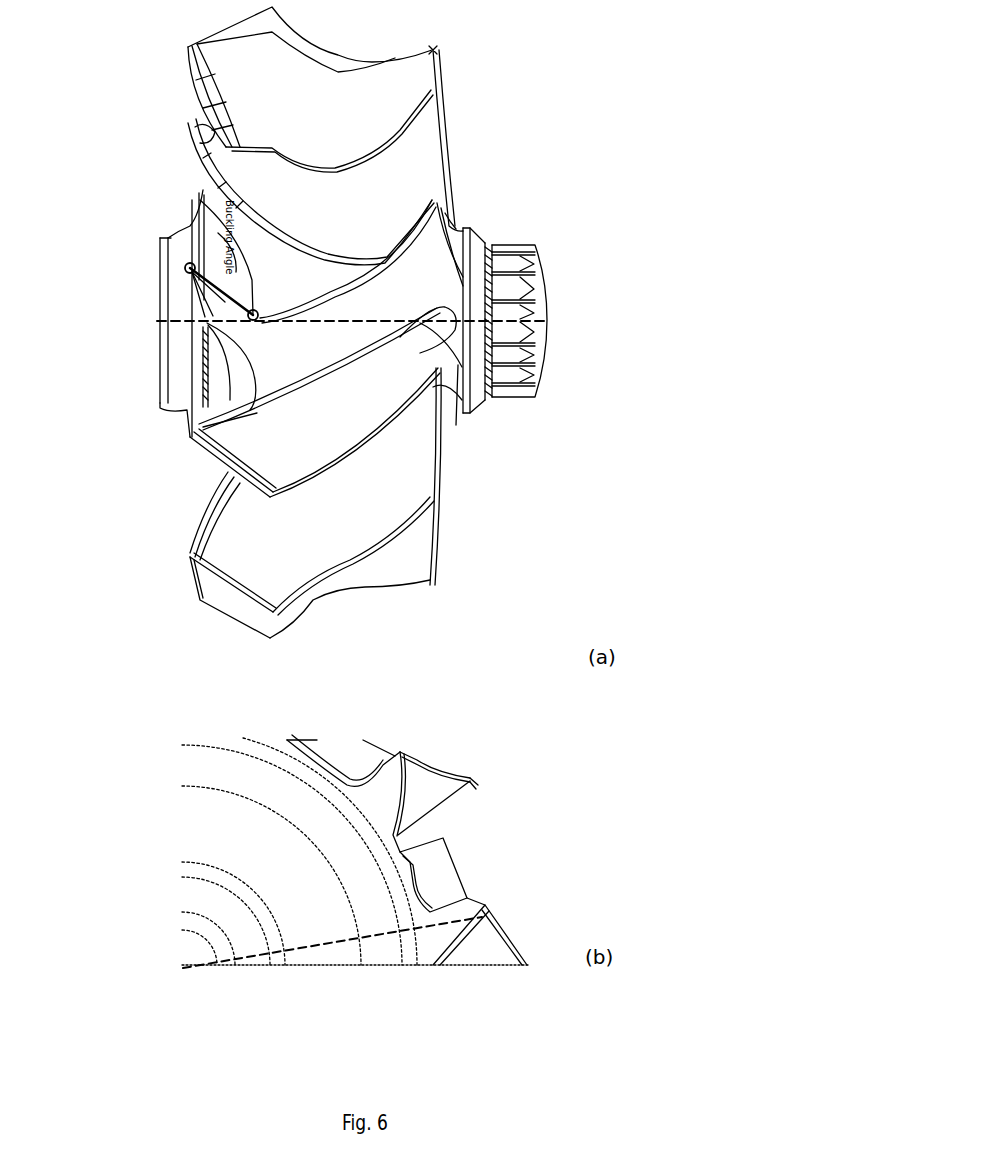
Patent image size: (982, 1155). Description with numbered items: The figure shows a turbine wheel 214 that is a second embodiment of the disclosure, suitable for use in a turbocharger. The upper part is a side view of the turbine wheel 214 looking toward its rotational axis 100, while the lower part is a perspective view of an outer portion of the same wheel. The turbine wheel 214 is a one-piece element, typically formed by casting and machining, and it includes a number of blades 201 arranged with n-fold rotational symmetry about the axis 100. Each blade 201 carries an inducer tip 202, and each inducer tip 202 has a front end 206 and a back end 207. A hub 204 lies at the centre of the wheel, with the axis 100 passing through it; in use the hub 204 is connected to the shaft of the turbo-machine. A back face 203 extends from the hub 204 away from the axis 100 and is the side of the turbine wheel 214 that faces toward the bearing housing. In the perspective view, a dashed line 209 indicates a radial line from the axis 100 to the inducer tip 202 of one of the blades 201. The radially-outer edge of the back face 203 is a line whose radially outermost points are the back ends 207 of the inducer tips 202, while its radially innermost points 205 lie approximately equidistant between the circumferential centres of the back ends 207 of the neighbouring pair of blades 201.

The turbine wheel 214 is at (543, 140).
The hub 204 is at (175, 233).
The rotational axis 100 is at (473, 316).
The blades 201 is at (347, 410).
The inducer tips 202 is at (230, 468).
The back end 207 is at (187, 555).
The front end 206 is at (272, 611).
The radially-innermost points 205 is at (407, 877).
The back face 203 is at (307, 910).
The dashed line 209 is at (343, 943).